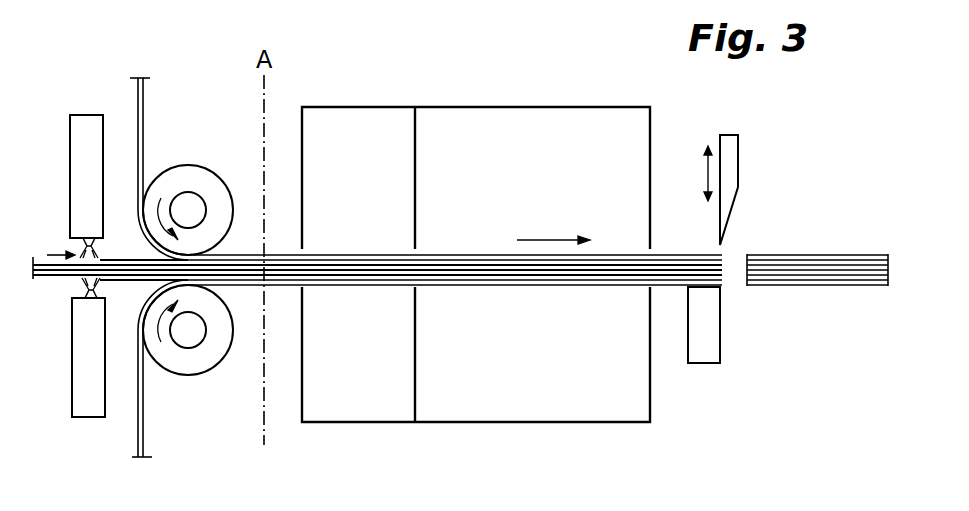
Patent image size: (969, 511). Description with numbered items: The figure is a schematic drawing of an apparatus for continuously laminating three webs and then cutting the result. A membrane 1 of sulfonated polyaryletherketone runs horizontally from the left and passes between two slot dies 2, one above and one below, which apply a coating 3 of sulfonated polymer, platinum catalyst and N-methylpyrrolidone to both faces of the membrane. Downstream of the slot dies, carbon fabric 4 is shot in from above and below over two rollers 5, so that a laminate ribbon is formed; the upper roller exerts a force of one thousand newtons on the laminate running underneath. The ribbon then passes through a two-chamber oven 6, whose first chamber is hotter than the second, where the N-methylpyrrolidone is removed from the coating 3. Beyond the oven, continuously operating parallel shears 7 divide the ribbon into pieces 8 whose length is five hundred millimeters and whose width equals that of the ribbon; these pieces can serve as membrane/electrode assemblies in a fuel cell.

The membrane 1 is at (60, 272).
The slot dies 2 is at (93, 118).
The coating 3 is at (125, 258).
The carbon fabric 4 is at (143, 106).
The rollers 5 is at (203, 180).
The two-chamber oven 6 is at (372, 117).
The parallel shears 7 is at (730, 165).
The pieces 8 is at (830, 260).